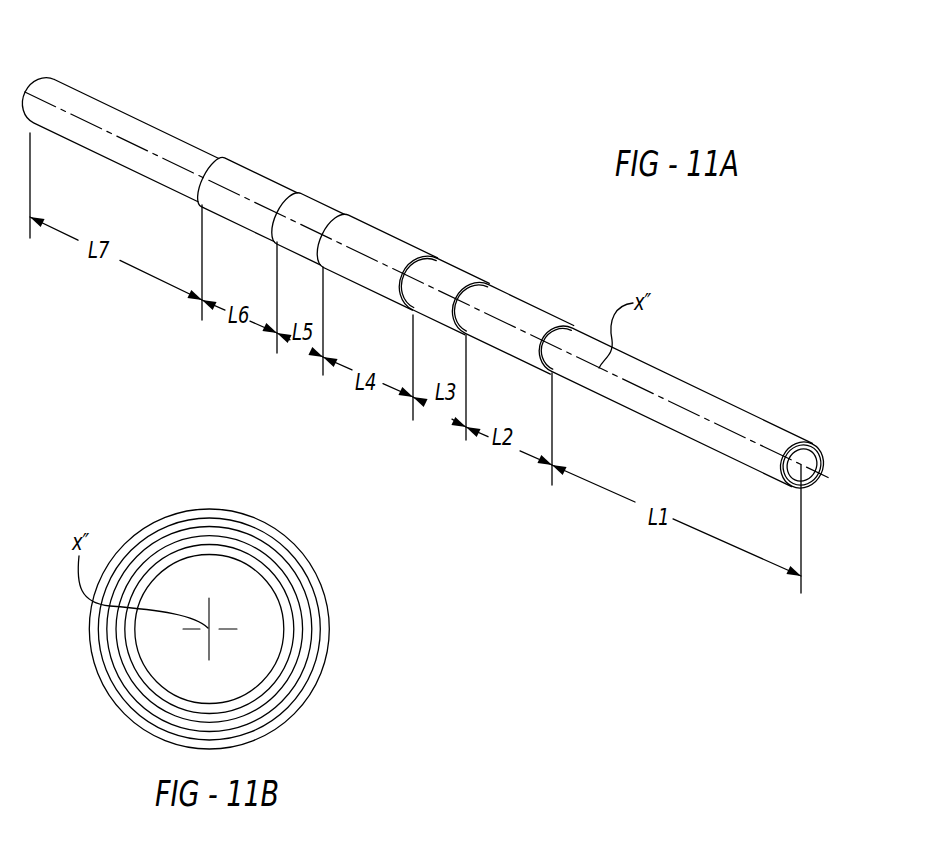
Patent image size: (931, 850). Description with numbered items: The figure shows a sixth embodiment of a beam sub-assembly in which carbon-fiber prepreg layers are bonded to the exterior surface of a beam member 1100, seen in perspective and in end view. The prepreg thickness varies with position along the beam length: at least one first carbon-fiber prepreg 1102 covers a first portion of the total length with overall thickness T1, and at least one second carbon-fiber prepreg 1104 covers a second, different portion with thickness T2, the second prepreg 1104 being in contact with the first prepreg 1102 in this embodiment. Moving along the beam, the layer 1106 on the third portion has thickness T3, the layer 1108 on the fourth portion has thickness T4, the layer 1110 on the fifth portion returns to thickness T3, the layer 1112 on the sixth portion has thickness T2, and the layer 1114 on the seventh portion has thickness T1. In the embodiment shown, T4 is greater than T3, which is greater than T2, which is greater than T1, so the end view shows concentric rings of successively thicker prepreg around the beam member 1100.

In FIG. 11A, the beam member 1100 is at (810, 444).
In FIG. 11B, the beam member 1100 is at (153, 685).
In FIG. 11A, the first carbon-fiber prepreg 1102 is at (642, 380).
In FIG. 11B, the first carbon-fiber prepreg 1102 is at (300, 650).
In FIG. 11A, the second carbon-fiber prepreg 1104 is at (518, 320).
In FIG. 11B, the second carbon-fiber prepreg 1104 is at (310, 613).
In FIG. 11A, the prepreg layer 1106 is at (458, 276).
In FIG. 11B, the prepreg layer 1106 is at (273, 537).
In FIG. 11A, the prepreg layer 1108 is at (368, 240).
In FIG. 11B, the prepreg layer 1108 is at (175, 512).
In FIG. 11A, the prepreg layer 1110 is at (315, 212).
In FIG. 11A, the prepreg layer 1112 is at (100, 110).
In FIG. 11A, the prepreg layer 1114 is at (255, 186).